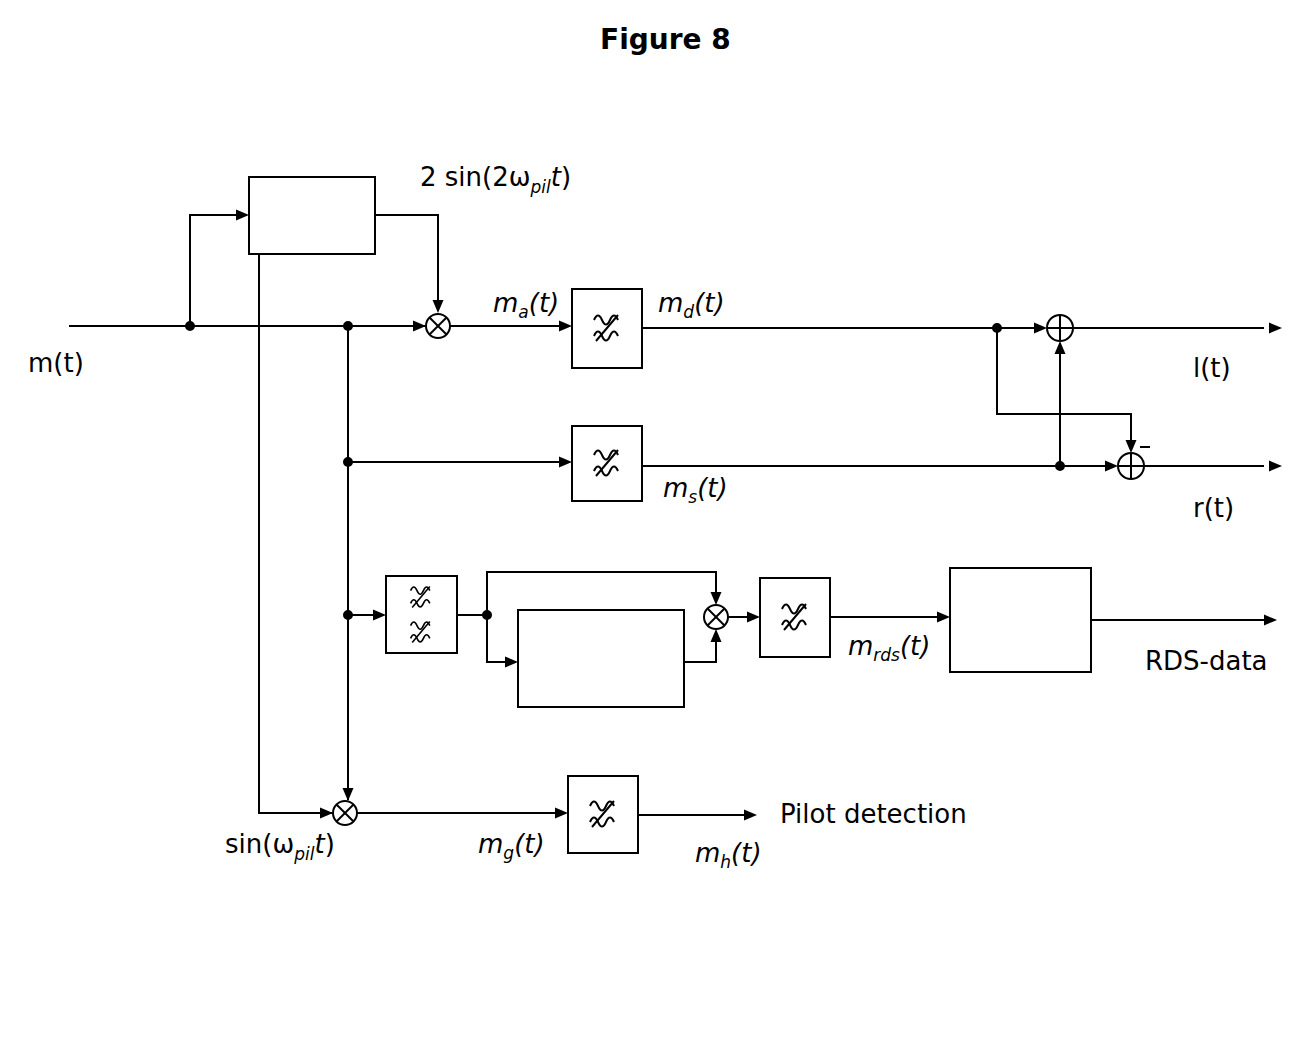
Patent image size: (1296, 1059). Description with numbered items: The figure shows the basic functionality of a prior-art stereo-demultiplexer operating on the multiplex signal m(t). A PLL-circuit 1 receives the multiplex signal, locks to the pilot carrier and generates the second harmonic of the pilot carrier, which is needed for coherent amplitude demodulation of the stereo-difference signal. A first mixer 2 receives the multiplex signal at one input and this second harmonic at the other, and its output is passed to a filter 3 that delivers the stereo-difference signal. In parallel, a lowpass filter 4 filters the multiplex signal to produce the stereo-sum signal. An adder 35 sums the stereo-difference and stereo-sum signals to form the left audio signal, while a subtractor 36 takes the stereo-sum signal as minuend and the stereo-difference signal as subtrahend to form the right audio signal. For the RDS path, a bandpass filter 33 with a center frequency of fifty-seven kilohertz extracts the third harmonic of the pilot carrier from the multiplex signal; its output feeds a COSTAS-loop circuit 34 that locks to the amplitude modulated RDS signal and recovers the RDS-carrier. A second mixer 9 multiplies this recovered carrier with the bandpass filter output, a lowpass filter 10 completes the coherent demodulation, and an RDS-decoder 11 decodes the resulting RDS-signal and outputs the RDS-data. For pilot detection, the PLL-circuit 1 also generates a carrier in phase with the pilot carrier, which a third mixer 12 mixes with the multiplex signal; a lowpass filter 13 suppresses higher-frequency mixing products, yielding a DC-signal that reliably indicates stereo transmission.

The PLL-circuit 1 is at (296, 176).
The first mixer 2 is at (446, 318).
The filter 3 is at (596, 289).
The lowpass filter 4 is at (643, 450).
The second mixer 9 is at (724, 606).
The lowpass filter 10 is at (817, 578).
The RDS-decoder 11 is at (983, 575).
The third mixer 12 is at (352, 803).
The lowpass filter 13 is at (626, 773).
The bandpass filter 33 is at (403, 576).
The COSTAS-loop circuit 34 is at (553, 708).
The adder 35 is at (1068, 318).
The subtractor 36 is at (1138, 450).